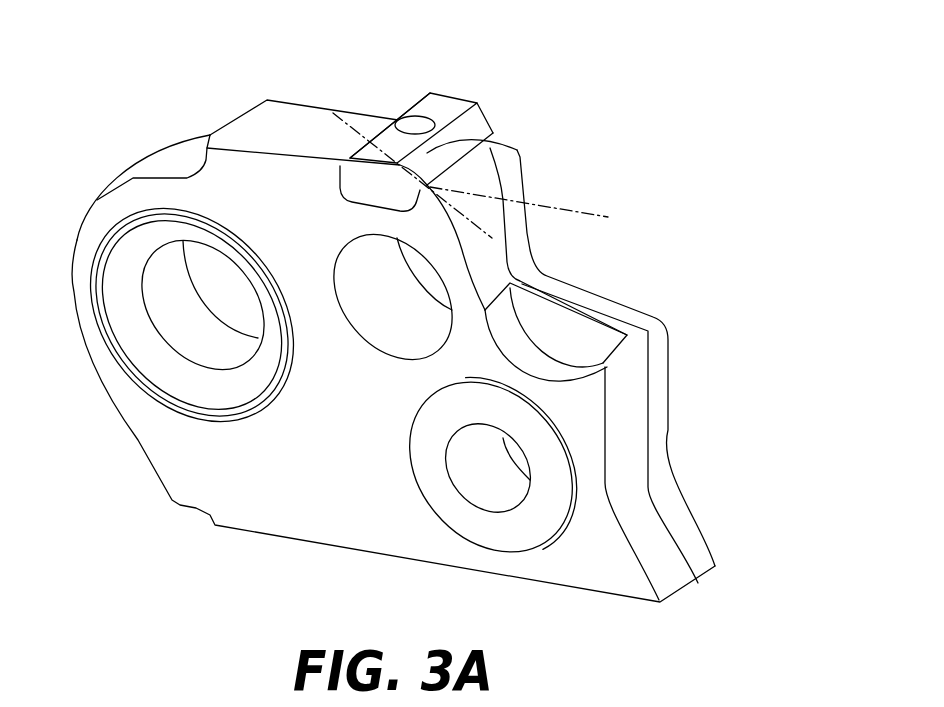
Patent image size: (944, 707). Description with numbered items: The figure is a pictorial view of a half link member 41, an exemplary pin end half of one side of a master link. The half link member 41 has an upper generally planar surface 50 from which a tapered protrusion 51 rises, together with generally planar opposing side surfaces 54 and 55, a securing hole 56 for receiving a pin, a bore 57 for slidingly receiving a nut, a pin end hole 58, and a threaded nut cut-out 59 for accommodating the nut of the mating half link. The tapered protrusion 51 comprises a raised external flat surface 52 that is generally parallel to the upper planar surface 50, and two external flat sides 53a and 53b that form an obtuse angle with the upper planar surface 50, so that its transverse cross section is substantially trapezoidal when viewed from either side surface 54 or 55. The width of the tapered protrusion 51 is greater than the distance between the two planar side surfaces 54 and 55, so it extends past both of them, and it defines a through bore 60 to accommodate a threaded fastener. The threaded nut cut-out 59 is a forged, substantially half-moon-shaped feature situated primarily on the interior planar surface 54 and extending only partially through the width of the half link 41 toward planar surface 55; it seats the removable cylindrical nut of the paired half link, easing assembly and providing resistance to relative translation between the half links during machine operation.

The half link member 41 is at (180, 497).
The upper generally planar surface 50 is at (253, 118).
The tapered protrusion 51 is at (452, 82).
The raised external flat surface 52 is at (482, 108).
The external flat side 53a is at (487, 125).
The external flat side 53b is at (413, 105).
The generally planar side surface 54 is at (605, 483).
The generally planar side surface 55 is at (670, 393).
The securing hole 56 is at (468, 490).
The bore 57 is at (376, 340).
The pin end hole 58 is at (155, 280).
The threaded nut cut-out 59 is at (590, 335).
The through bore 60 is at (426, 122).